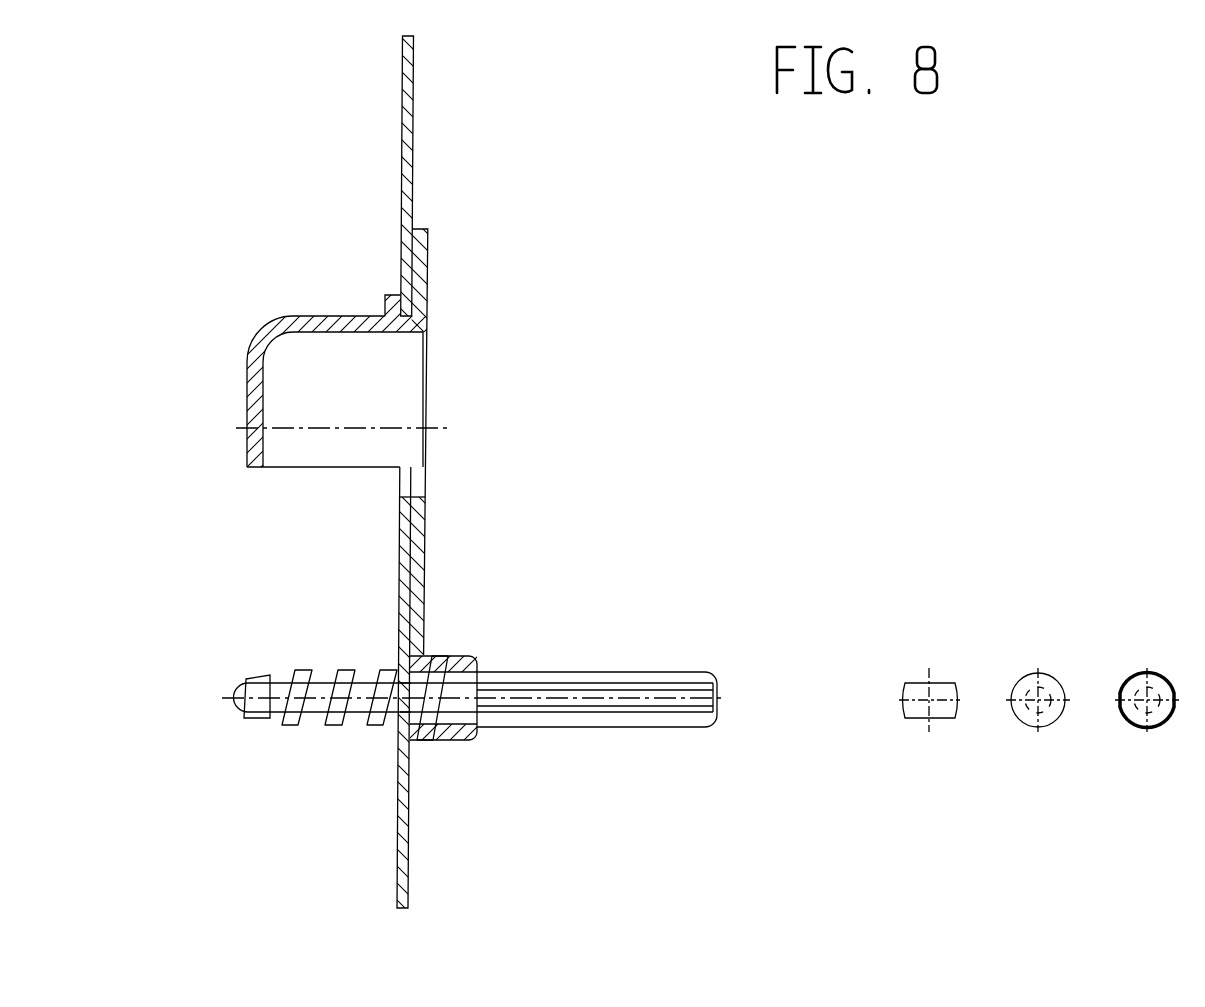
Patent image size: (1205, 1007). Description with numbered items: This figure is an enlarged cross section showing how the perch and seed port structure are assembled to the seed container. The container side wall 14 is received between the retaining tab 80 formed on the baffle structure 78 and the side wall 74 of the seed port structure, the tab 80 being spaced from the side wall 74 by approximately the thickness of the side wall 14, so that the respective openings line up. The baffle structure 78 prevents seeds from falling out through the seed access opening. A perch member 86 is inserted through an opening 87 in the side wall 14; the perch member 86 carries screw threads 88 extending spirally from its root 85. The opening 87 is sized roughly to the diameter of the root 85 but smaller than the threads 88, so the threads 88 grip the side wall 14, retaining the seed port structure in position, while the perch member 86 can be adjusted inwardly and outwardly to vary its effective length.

The side wall 14 is at (413, 135).
The side wall 74 is at (428, 272).
The baffle structure 78 is at (307, 315).
The retaining tab 80 is at (388, 294).
The root 85 is at (317, 712).
The perch member 86 is at (632, 672).
The opening 87 is at (397, 716).
The screw threads 88 is at (303, 670).